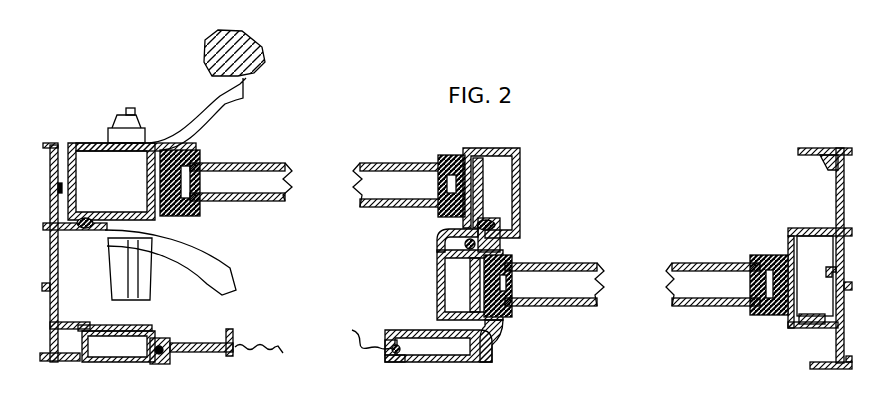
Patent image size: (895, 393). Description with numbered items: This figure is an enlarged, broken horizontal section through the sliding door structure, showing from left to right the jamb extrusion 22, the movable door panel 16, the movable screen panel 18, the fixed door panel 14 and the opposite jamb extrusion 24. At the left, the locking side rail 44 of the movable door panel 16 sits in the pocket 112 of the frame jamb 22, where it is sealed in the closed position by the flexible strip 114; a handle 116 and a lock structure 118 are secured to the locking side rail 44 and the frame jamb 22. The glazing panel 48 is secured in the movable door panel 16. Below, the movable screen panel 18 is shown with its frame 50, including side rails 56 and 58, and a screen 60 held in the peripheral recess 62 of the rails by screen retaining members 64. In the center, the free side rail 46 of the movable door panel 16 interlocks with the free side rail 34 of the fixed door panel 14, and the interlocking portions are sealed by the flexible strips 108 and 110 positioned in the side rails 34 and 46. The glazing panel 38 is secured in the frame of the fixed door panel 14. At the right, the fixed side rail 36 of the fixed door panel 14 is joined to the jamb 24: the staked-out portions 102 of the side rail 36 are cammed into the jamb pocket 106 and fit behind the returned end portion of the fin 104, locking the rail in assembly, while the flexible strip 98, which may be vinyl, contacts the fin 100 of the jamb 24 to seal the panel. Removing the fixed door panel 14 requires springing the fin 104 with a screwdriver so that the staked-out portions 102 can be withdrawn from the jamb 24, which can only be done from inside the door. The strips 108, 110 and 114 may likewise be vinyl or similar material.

The fixed door panel 14 is at (706, 263).
The movable door panel 16 is at (234, 163).
The movable screen panel 18 is at (272, 361).
The jamb extrusion 22 is at (50, 303).
The jamb extrusion 24 is at (806, 148).
The free side rail 34 is at (437, 300).
The fixed side rail 36 is at (770, 318).
The glazing panel 38 is at (582, 306).
The locking side rail 44 is at (88, 143).
The free side rail 46 is at (520, 232).
The glazing panel 48 is at (380, 165).
The frame 50 is at (410, 360).
The side rail 56 is at (105, 362).
The side rail 58 is at (440, 362).
The screen 60 is at (356, 330).
The peripheral recess 62 is at (394, 345).
The screen retaining members 64 is at (160, 345).
The flexible strip 98 is at (816, 323).
The fin 100 is at (830, 330).
The staked-out portions 102 is at (805, 245).
The fin 104 is at (788, 240).
The jamb pocket 106 is at (800, 319).
The flexible strip 108 is at (437, 258).
The flexible strip 110 is at (486, 222).
The pocket 112 is at (56, 188).
The flexible strip 114 is at (80, 229).
The handle 116 is at (255, 42).
The lock structure 118 is at (108, 276).